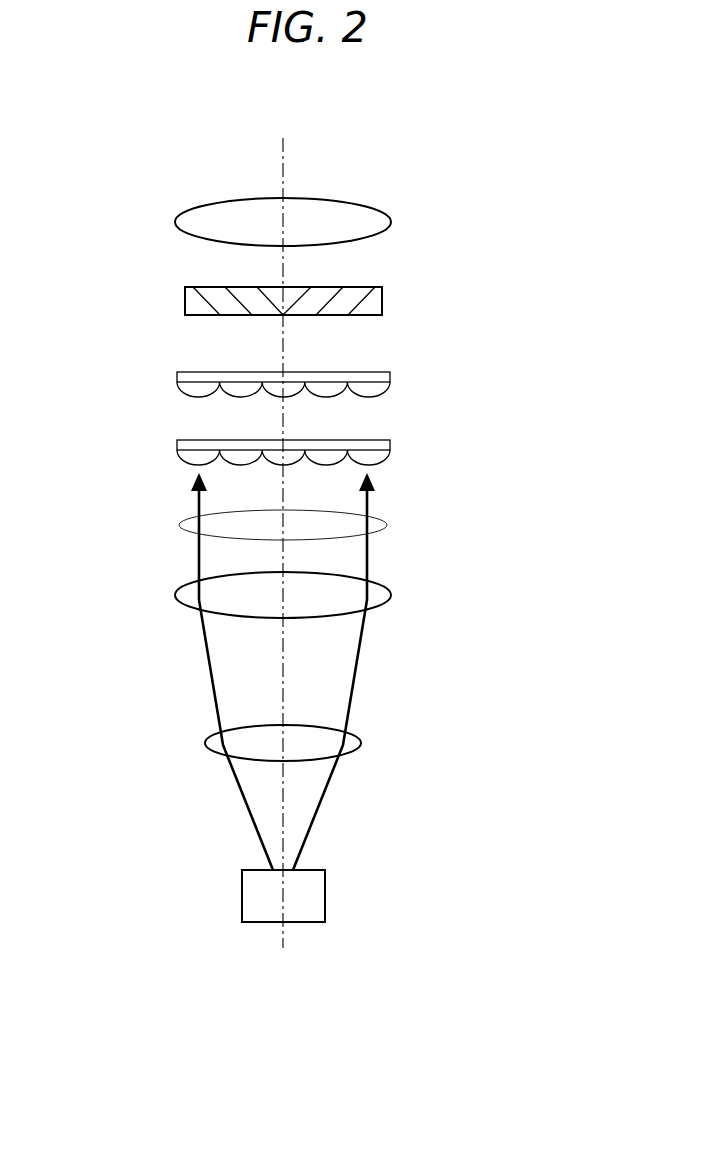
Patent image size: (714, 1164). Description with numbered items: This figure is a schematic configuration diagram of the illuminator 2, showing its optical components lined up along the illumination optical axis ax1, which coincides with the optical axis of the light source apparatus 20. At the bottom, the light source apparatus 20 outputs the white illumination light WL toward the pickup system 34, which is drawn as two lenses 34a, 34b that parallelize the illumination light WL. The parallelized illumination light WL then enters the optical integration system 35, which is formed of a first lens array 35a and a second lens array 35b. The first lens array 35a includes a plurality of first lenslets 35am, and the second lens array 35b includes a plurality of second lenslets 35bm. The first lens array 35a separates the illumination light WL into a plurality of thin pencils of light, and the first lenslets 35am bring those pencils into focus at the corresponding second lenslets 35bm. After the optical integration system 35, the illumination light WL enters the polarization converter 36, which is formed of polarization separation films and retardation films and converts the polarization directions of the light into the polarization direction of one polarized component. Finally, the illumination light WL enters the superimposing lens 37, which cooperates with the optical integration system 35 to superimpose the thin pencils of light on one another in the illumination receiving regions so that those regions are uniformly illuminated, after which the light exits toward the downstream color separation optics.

The illuminator 2 is at (502, 158).
The light source apparatus 20 is at (243, 854).
The pickup system 34 is at (370, 666).
The first lens of the pickup system 34a is at (345, 740).
The second lens of the pickup system 34b is at (377, 610).
The optical integration system 35 is at (315, 423).
The first lens array 35a is at (287, 454).
The second lens array 35b is at (287, 392).
The first lenslets 35am is at (187, 461).
The second lenslets 35bm is at (187, 395).
The polarization converter 36 is at (382, 301).
The superimposing lens 37 is at (345, 212).
The illumination light WL is at (387, 522).
The illumination optical axis ax1 is at (283, 163).